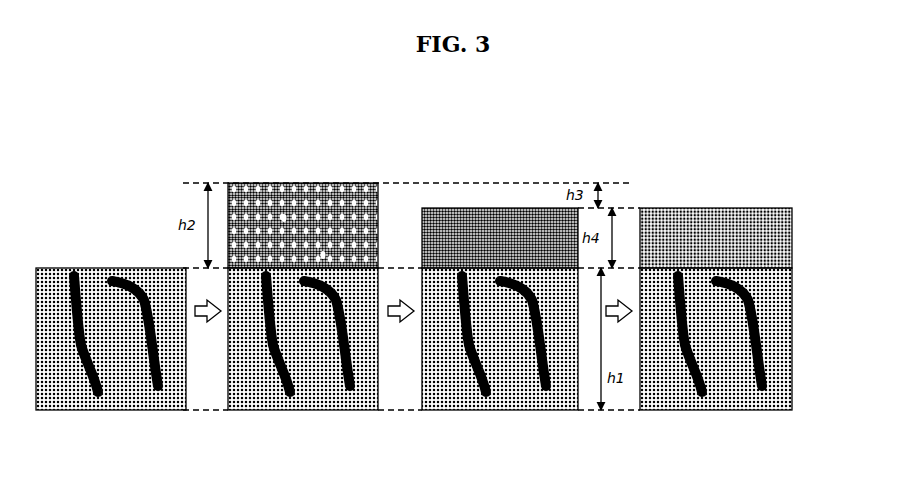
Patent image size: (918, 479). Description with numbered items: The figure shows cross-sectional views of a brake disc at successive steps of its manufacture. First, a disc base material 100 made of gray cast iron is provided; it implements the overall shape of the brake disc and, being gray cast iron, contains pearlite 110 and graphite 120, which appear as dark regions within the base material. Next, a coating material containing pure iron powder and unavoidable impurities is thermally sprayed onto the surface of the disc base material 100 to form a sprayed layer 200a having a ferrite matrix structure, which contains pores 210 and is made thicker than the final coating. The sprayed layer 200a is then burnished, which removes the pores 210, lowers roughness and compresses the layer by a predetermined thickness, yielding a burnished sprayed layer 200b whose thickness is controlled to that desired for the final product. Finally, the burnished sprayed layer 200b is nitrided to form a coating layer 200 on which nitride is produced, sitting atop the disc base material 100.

The disc base material 100 is at (153, 145).
The pearlite 110 is at (55, 307).
The graphite 120 is at (132, 284).
The coating layer 200 is at (800, 210).
The sprayed layer 200a is at (241, 183).
The burnished sprayed layer 200b is at (500, 208).
The pores 210 is at (323, 253).